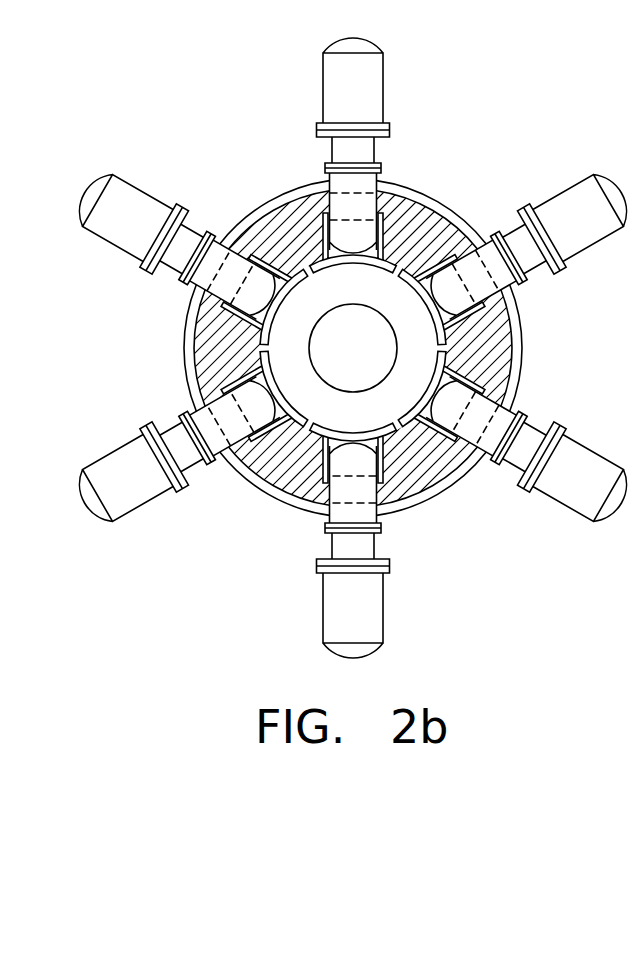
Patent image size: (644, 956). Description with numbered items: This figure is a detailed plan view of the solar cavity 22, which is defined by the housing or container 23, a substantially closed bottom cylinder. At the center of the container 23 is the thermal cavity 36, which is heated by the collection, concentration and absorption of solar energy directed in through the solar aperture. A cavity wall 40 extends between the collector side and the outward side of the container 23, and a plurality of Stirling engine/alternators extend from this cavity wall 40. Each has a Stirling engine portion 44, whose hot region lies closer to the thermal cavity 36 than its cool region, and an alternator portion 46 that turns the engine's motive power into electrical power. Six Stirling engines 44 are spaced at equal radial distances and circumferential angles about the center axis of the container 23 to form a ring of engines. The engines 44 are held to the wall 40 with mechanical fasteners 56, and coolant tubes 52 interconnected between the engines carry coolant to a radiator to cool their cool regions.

The cavity 22 is at (460, 92).
The container 23 is at (417, 475).
The thermal cavity 36 is at (367, 422).
The cavity wall 40 is at (438, 222).
The Stirling engine portion 44 is at (384, 171).
The alternator portion 46 is at (320, 70).
The tubes 52 is at (515, 321).
The mechanical fasteners 56 is at (320, 230).